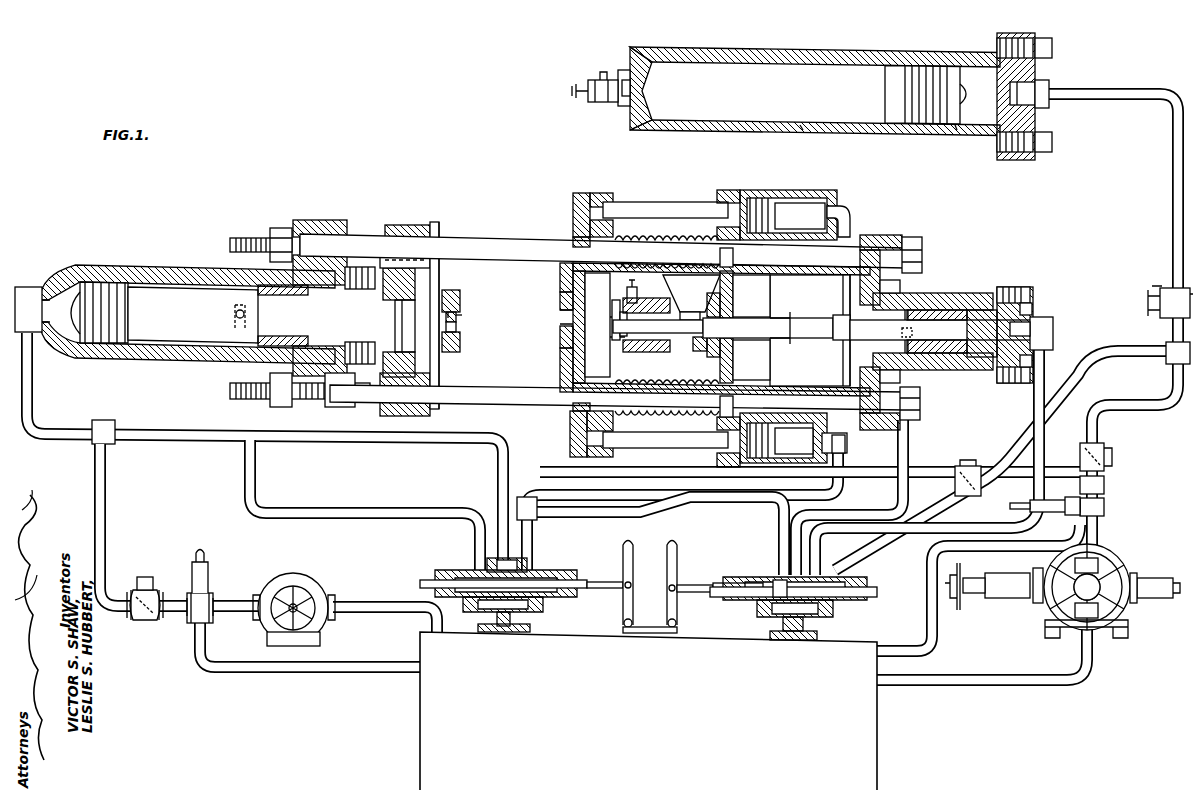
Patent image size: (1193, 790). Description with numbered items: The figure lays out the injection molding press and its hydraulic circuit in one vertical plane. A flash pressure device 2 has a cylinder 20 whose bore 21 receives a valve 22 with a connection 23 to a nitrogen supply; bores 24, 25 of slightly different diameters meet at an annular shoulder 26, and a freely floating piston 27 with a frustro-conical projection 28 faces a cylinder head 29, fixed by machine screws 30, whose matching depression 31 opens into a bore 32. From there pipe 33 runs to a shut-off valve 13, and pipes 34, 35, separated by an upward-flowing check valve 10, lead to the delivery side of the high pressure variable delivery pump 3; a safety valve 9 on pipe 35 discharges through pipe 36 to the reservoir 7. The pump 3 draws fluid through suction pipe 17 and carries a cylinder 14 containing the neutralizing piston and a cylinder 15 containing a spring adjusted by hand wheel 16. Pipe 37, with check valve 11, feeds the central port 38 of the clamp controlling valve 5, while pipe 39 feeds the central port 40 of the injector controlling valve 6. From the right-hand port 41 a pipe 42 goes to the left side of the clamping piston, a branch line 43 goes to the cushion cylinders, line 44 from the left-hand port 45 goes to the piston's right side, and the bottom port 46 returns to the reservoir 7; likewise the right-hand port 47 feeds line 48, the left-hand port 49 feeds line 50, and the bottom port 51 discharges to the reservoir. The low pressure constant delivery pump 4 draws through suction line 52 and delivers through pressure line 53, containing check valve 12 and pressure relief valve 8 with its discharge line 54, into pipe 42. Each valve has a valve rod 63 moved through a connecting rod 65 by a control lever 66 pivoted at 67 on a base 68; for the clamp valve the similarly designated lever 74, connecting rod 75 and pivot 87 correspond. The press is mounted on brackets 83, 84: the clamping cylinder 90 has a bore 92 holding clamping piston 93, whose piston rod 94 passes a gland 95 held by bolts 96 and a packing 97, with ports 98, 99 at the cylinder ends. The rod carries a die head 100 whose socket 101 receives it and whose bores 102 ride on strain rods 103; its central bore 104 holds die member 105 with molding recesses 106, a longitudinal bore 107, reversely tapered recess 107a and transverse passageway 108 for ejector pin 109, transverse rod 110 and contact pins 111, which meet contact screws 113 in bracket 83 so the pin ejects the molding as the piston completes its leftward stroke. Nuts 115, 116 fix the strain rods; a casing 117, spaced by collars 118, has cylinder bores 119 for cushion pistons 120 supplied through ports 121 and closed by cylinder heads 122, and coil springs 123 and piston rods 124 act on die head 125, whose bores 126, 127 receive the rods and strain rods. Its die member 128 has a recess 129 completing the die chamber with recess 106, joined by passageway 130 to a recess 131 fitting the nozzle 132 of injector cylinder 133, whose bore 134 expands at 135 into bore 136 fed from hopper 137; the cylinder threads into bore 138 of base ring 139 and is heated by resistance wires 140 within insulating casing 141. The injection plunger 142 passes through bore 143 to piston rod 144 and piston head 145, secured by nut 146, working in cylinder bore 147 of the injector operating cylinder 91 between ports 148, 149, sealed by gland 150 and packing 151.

The flash pressure device 2 is at (870, 52).
The high pressure variable delivery pump 3 is at (1122, 568).
The low pressure constant delivery pump 4 is at (312, 582).
The clamp controlling valve 5 is at (452, 562).
The injector controlling valve 6 is at (780, 560).
The reservoir 7 is at (870, 730).
The pressure relief valve 8 is at (208, 575).
The safety valve 9 is at (1050, 504).
The check valve 10 is at (1098, 447).
The check valve 11 is at (974, 471).
The check valve 12 is at (145, 618).
The shut-off valve 13 is at (1170, 290).
The cylinder 14 is at (1152, 580).
The cylinder 15 is at (1010, 578).
The hand wheel 16 is at (962, 575).
The suction pipe 17 is at (1030, 680).
The cylinder 20 is at (765, 133).
The bore 21 is at (620, 100).
The valve 22 is at (590, 94).
The connection 23 is at (600, 75).
The bore 24 is at (810, 128).
The bore 25 is at (965, 130).
The annular shoulder 26 is at (885, 80).
The piston 27 is at (935, 70).
The frustro-conical projection 28 is at (967, 92).
The cylinder head 29 is at (1020, 38).
The machine screws 30 is at (1052, 46).
The frustro-conical depression 31 is at (1012, 95).
The bore 32 is at (1048, 105).
The pipe 33 is at (1176, 180).
The pipe 34 is at (1157, 409).
The pipe 35 is at (1100, 494).
The discharge pipe 36 is at (928, 593).
The pipe 37 is at (935, 460).
The central port 38 is at (500, 512).
The pipe 39 is at (920, 531).
The central port 40 is at (801, 556).
The right-hand port 41 is at (530, 578).
The pipe 42 is at (31, 380).
The branch line 43 is at (563, 510).
The line 44 is at (326, 518).
The left-hand port 45 is at (486, 562).
The bottom port 46 is at (500, 632).
The right-hand port 47 is at (816, 572).
The line 48 is at (908, 450).
The left-hand port 49 is at (770, 582).
The line 50 is at (1042, 387).
The bottom port 51 is at (803, 630).
The suction line 52 is at (374, 605).
The pressure line 53 is at (107, 515).
The relief valve discharge line 54 is at (336, 672).
The valve rod 63 is at (716, 583).
The connecting rod 65 is at (696, 585).
The control lever 66 is at (677, 612).
The pivot 67 is at (676, 627).
The base 68 is at (648, 634).
The control lever 74 is at (622, 617).
The connecting rod 75 is at (610, 583).
The bracket 83 is at (311, 220).
The bracket 84 is at (895, 237).
The pivot 87 is at (625, 627).
The clamping cylinder 90 is at (140, 266).
The injector operating cylinder 91 is at (962, 300).
The bore 92 is at (174, 268).
The clamping piston 93 is at (118, 346).
The piston rod 94 is at (165, 322).
The gland 95 is at (364, 289).
The bolts 96 is at (362, 342).
The packing 97 is at (296, 296).
The port 98 is at (50, 287).
The port 99 is at (250, 316).
The die head 100 is at (399, 364).
The socket 101 is at (390, 292).
The bores 102 is at (405, 225).
The strain rods 103 is at (494, 245).
The central bore 104 is at (395, 320).
The die member 105 is at (452, 290).
The recesses 106 is at (456, 312).
The longitudinal bore 107 is at (456, 315).
The reversely tapered recess 107a is at (487, 306).
The transverse passageway 108 is at (460, 343).
The ejector pin 109 is at (456, 326).
The transverse rod 110 is at (440, 355).
The contact pins 111 is at (435, 230).
The contact screws 113 is at (256, 238).
The nuts 115 is at (281, 228).
The nuts 116 is at (918, 240).
The casing 117 is at (770, 274).
The spacing collars 118 is at (830, 274).
The cylinder bores 119 is at (800, 203).
The cushion pistons 120 is at (766, 198).
The ports 121 is at (845, 206).
The cylinder heads 122 is at (720, 195).
The coil springs 123 is at (662, 432).
The piston rods 124 is at (665, 232).
The die head 125 is at (580, 193).
The bores 126 is at (600, 193).
The bores 127 is at (575, 237).
The die member 128 is at (560, 352).
The recess 129 is at (666, 234).
The longitudinal passageway 130 is at (560, 326).
The recess 131 is at (595, 320).
The nozzle 132 is at (615, 328).
The injector cylinder 133 is at (655, 300).
The bore 134 is at (614, 340).
The internal expansion 135 is at (622, 337).
The internal bore 136 is at (688, 348).
The hopper 137 is at (745, 327).
The bore 138 is at (710, 282).
The base ring 139 is at (710, 357).
The resistance wires 140 is at (629, 286).
The insulating casing 141 is at (650, 352).
The injection plunger 142 is at (813, 328).
The bore 143 is at (772, 318).
The piston rod 144 is at (838, 334).
The piston head 145 is at (980, 310).
The nut 146 is at (1022, 312).
The cylinder bore 147 is at (940, 310).
The port 148 is at (912, 331).
The port 149 is at (1053, 330).
The gland 150 is at (898, 286).
The packing 151 is at (920, 300).